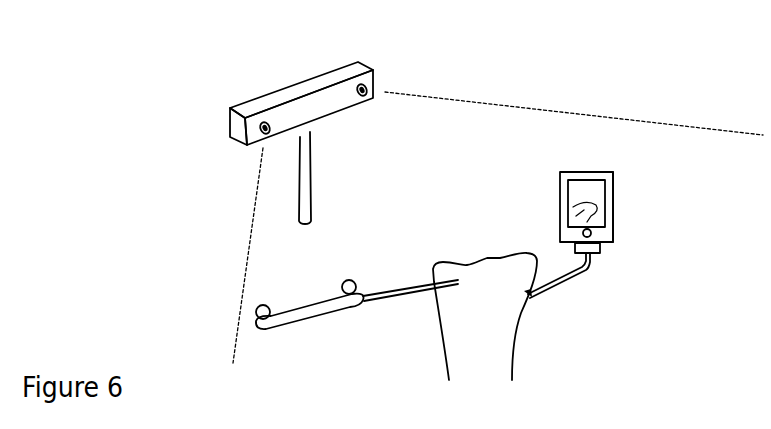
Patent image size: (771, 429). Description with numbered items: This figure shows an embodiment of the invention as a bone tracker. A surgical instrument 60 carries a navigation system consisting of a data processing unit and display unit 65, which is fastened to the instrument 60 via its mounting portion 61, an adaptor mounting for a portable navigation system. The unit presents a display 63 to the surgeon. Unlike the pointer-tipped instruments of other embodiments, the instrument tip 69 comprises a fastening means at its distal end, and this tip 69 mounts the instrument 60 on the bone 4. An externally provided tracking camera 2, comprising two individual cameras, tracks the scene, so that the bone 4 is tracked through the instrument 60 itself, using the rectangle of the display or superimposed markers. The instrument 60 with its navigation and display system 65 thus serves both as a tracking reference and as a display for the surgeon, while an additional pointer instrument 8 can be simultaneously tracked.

The tracking camera 2 is at (290, 92).
The bone 4 is at (485, 262).
The pointer instrument 8 is at (323, 336).
The surgical instrument 60 is at (623, 203).
The mounting portion 61 is at (598, 249).
The display 63 is at (580, 188).
The data processing unit and display unit 65 is at (615, 180).
The instrument tip 69 is at (589, 263).